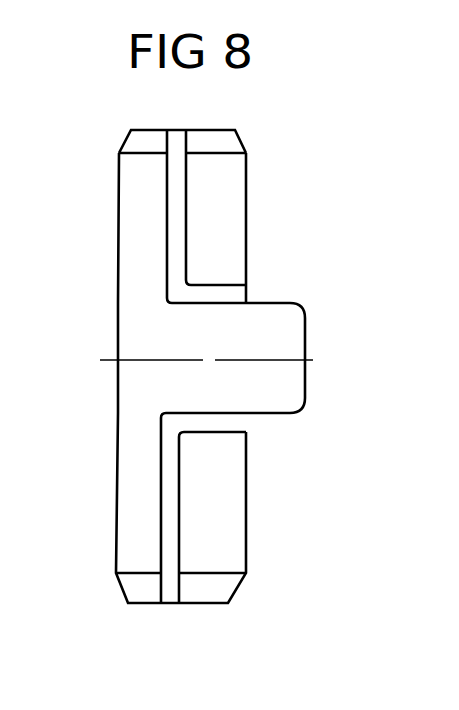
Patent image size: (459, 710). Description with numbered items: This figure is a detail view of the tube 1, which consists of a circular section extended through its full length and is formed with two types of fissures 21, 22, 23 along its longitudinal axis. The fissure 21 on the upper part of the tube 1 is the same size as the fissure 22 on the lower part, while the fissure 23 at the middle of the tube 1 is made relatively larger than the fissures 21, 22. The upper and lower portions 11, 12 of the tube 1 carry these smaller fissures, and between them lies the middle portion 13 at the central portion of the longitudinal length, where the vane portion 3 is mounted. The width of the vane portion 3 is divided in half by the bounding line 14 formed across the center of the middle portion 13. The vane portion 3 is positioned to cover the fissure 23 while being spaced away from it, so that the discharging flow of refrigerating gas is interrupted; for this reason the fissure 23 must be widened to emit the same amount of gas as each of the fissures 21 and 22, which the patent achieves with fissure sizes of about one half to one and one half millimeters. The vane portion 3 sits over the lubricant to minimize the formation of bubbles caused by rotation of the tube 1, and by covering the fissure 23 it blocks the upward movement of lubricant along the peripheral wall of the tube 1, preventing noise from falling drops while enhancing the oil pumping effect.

The tube 1 is at (246, 245).
The vane portion 3 is at (283, 408).
The upper arm portion 11 is at (140, 248).
The lower arm portion 12 is at (128, 540).
The middle portion 13 is at (133, 385).
The bounding line 14 is at (282, 364).
The fissure 21 is at (177, 173).
The fissure 22 is at (166, 595).
The fissure 23 is at (197, 296).